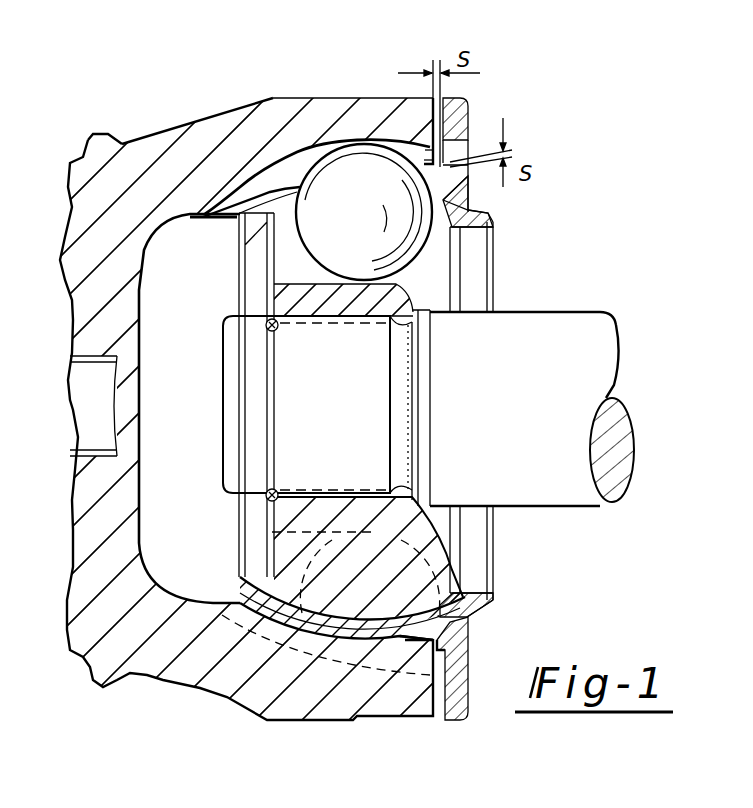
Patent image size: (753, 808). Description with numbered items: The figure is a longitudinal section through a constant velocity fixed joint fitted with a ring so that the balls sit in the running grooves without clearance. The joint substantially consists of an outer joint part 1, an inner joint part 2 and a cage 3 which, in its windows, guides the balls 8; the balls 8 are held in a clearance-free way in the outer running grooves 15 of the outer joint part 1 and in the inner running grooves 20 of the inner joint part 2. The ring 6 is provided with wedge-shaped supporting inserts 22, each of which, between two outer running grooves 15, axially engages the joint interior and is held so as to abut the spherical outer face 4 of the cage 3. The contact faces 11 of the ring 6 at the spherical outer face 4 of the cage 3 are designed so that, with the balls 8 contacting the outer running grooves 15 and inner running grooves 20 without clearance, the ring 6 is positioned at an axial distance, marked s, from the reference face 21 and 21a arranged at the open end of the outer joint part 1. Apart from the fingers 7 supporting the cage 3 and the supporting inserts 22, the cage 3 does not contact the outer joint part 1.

The outer joint part 1 is at (138, 203).
The inner joint part 2 is at (277, 300).
The cage 3 is at (247, 200).
The spherical outer face 4 is at (403, 637).
The ring 6 is at (480, 130).
The fingers 7 is at (403, 633).
The balls 8 is at (357, 203).
The contact faces 11 is at (483, 607).
The outer running grooves 15 is at (432, 97).
The inner running grooves 20 is at (283, 240).
The reference face 21 is at (427, 160).
The reference face 21a is at (427, 150).
The supporting inserts 22 is at (470, 637).